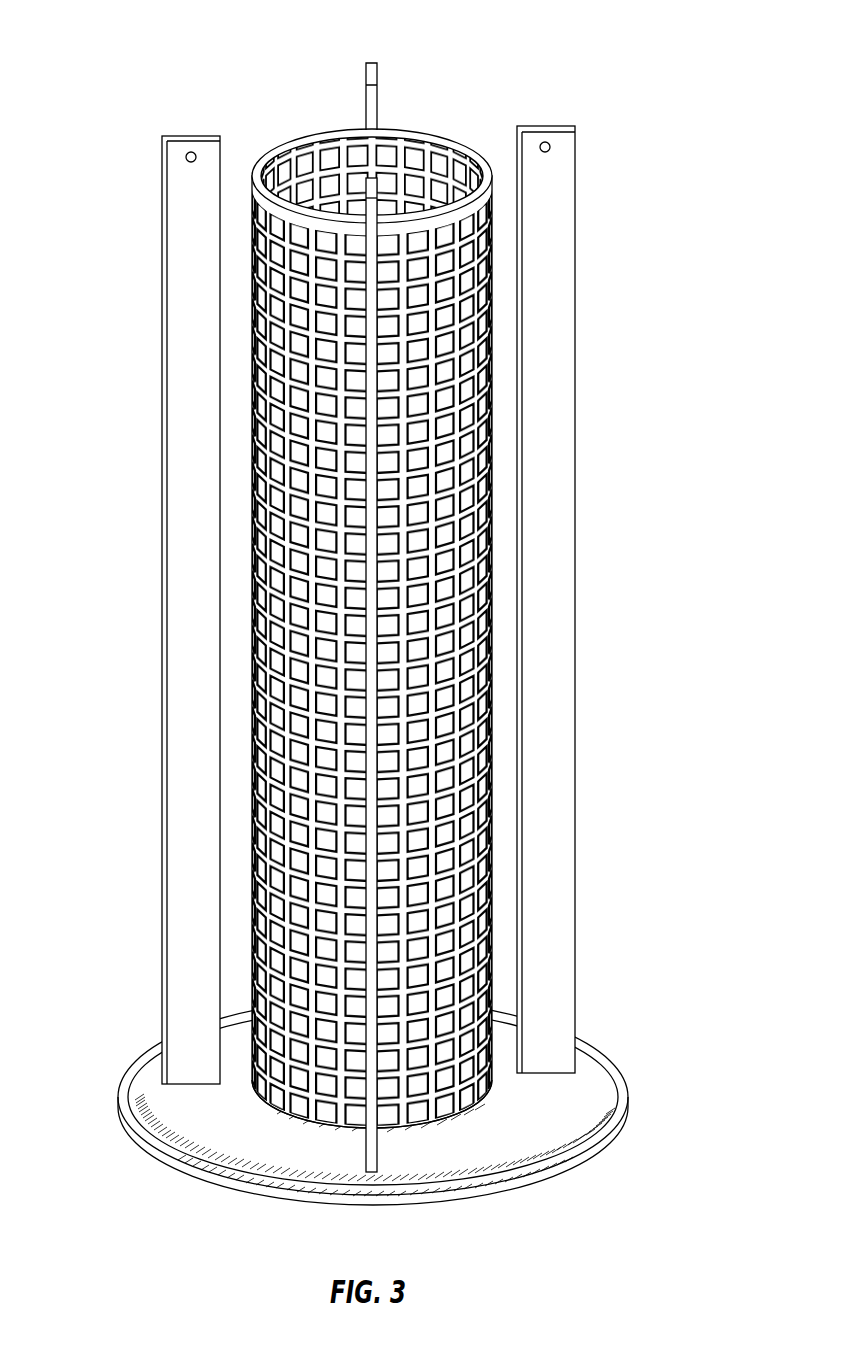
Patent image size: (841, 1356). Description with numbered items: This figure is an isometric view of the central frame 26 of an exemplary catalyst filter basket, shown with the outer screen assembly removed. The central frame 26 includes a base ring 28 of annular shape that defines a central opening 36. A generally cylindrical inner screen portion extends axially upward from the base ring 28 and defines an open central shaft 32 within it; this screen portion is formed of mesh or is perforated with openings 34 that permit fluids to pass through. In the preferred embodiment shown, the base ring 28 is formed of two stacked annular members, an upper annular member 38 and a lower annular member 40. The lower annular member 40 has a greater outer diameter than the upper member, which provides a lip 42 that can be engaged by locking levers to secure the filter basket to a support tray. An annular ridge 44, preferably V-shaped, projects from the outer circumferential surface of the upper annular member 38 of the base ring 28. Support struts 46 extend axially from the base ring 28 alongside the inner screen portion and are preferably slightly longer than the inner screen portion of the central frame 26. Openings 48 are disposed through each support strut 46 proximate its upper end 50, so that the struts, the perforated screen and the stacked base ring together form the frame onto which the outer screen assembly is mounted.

The central frame 26 is at (370, 622).
The base ring 28 is at (356, 1118).
The open central shaft 32 is at (344, 652).
The openings 34 is at (432, 155).
The central opening 36 is at (310, 1118).
The upper annular member 38 is at (570, 1110).
The lower annular member 40 is at (540, 1178).
The lip 42 is at (212, 1172).
The annular ridge 44 is at (585, 1138).
The support struts 46 is at (190, 732).
The openings 48 is at (186, 160).
The upper end 50 is at (373, 62).